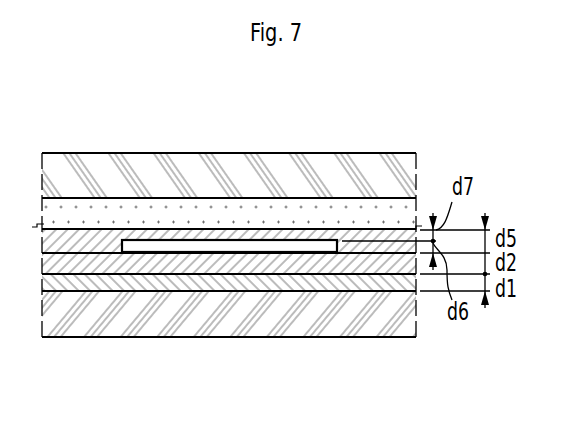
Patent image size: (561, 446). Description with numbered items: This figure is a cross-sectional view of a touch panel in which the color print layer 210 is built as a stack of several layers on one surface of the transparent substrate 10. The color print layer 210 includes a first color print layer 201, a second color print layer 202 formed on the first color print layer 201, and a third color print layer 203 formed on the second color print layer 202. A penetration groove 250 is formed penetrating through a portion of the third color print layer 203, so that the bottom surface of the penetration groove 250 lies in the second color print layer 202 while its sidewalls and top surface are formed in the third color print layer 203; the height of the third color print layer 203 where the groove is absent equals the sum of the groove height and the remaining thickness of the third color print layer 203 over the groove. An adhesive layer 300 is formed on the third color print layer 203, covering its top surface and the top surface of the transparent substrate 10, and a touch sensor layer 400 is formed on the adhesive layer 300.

The transparent substrate 10 is at (120, 327).
The first color print layer 201 is at (307, 283).
The second color print layer 202 is at (327, 265).
The third color print layer 203 is at (273, 235).
The color print layer 210 is at (239, 326).
The penetration groove 250 is at (193, 248).
The adhesive layer 300 is at (268, 213).
The touch sensor layer 400 is at (182, 160).